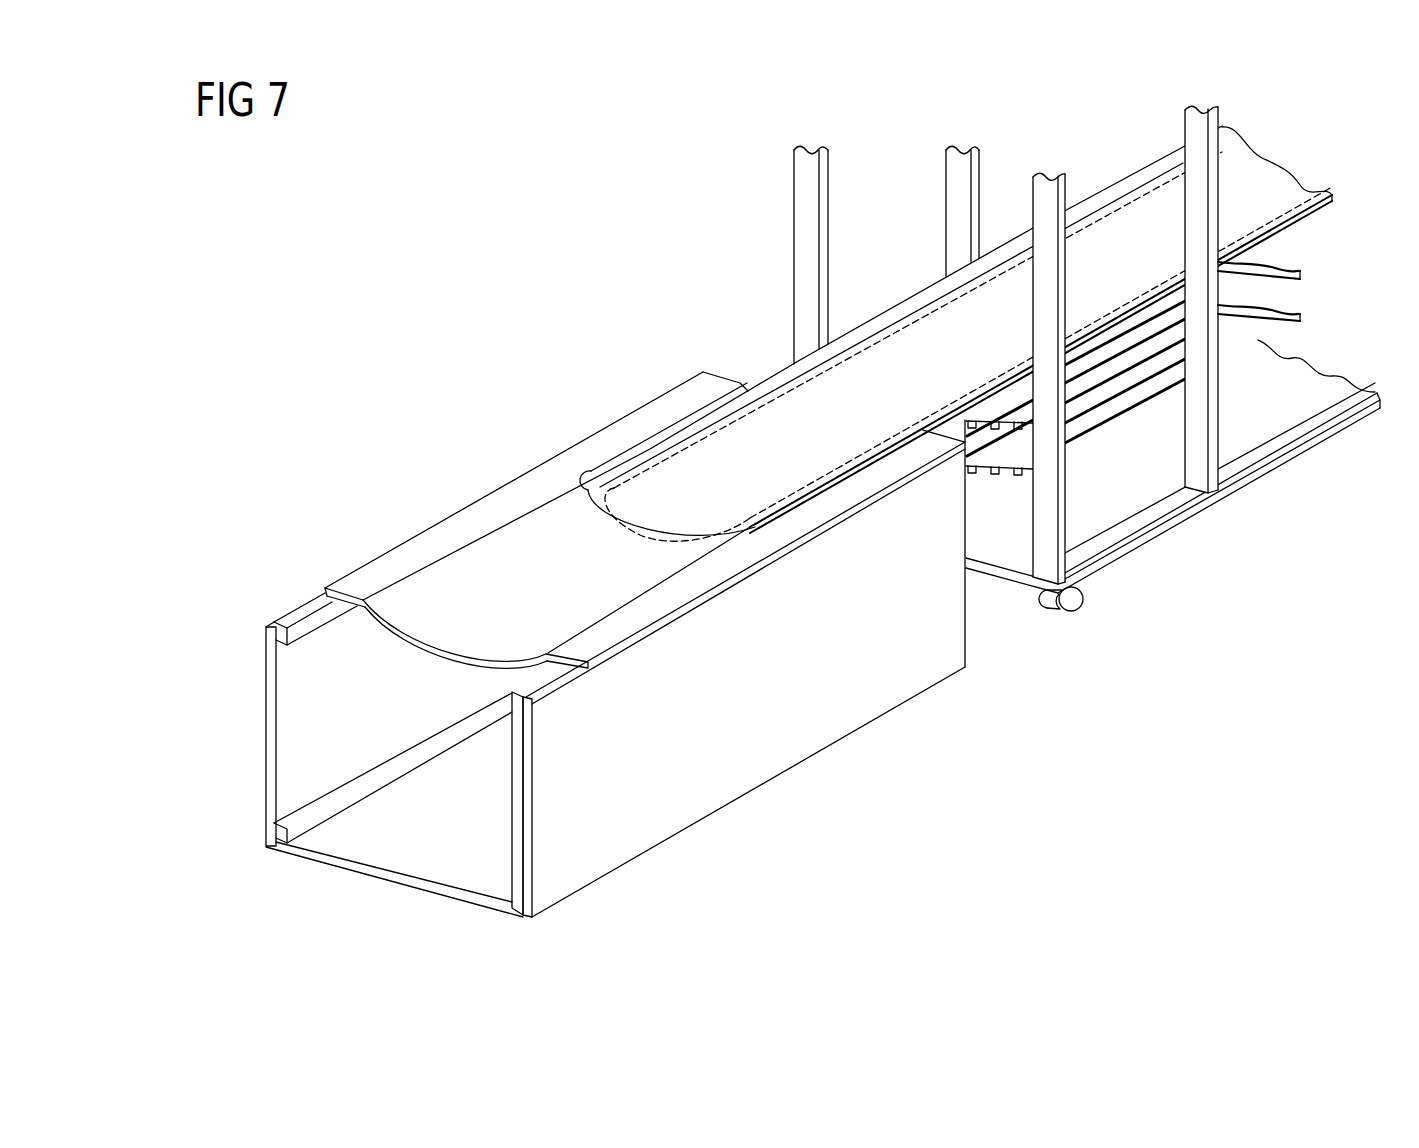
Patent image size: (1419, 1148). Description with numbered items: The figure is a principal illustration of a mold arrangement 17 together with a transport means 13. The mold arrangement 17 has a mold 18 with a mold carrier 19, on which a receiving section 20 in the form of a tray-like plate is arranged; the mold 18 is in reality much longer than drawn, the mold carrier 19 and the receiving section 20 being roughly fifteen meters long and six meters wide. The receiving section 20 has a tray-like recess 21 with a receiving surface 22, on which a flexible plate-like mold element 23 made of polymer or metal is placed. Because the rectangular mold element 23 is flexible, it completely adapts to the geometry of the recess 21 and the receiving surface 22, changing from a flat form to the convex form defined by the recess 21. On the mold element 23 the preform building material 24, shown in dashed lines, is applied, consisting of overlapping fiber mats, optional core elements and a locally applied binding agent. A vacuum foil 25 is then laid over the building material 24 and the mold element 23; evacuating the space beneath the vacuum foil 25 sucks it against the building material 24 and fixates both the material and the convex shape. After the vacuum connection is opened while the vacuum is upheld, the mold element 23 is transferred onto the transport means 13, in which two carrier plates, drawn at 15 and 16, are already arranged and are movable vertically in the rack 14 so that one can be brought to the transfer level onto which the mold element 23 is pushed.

The transport means 13 is at (1090, 366).
The rack 14 is at (1275, 448).
The plate on cart 15 is at (1320, 264).
The plate on cart 16 is at (1320, 306).
The mold arrangement 17 is at (828, 410).
The mold 18 is at (575, 668).
The mold carrier 19 is at (268, 730).
The receiving section 20 is at (537, 533).
The tray-like recess 21 is at (792, 363).
The receiving surface 22 is at (450, 634).
The plate-like mold element 23 is at (602, 492).
The preform building material 24 is at (690, 447).
The vacuum foil 25 is at (807, 433).